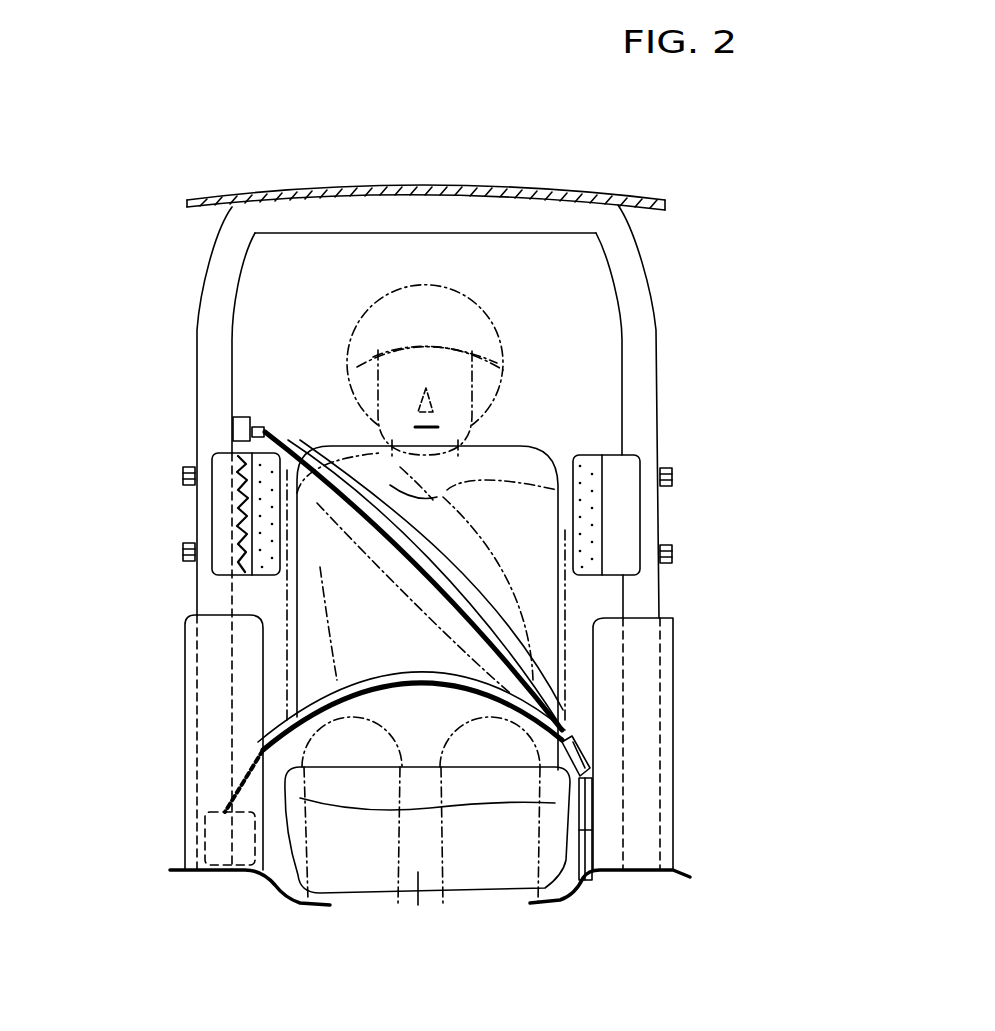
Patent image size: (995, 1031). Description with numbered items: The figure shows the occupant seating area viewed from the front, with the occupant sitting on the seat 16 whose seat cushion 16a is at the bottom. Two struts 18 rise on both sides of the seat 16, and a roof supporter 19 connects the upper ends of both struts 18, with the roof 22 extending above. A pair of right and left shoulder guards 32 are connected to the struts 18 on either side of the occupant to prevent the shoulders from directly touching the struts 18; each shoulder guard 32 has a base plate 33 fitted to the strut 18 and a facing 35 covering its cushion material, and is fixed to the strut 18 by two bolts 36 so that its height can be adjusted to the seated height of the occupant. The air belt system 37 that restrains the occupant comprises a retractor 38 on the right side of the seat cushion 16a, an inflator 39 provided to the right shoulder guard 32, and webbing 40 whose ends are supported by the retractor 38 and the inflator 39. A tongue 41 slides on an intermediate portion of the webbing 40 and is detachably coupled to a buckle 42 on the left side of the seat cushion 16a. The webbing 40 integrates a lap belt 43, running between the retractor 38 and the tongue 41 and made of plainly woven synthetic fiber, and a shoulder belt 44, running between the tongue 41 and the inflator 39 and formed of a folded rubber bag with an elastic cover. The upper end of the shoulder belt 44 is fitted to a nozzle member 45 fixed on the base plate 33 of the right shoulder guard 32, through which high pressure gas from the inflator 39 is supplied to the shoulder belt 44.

The seat 16 is at (522, 440).
The seat cushion 16a is at (418, 878).
The strut 18 is at (202, 318).
The roof supporter 19 is at (383, 222).
The roof 22 is at (415, 186).
The shoulder guard 32 is at (290, 528).
The base plate 33 is at (220, 452).
The facing 35 is at (265, 565).
The bolt 36 is at (183, 478).
The air belt system 37 is at (568, 706).
The retractor 38 is at (245, 876).
The inflator 39 is at (225, 510).
The webbing 40 is at (112, 643).
The tongue 41 is at (568, 742).
The buckle 42 is at (580, 775).
The lap belt 43 is at (290, 700).
The shoulder belt 44 is at (437, 568).
The nozzle member 45 is at (243, 417).